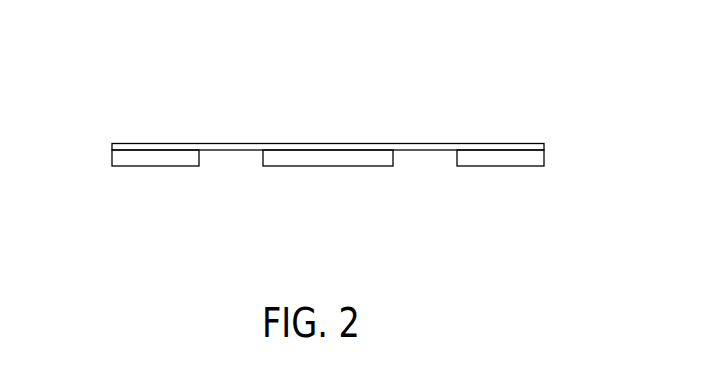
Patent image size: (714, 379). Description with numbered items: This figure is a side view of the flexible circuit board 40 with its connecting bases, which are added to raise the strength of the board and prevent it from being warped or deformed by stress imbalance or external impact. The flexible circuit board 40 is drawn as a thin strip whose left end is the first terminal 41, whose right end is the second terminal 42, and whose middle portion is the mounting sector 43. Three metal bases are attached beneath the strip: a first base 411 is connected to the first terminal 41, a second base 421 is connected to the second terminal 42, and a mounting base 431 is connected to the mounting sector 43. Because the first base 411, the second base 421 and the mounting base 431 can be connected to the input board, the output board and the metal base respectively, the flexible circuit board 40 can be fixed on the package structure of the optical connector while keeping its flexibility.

The flexible circuit board 40 is at (330, 128).
The first terminal 41 is at (131, 175).
The second terminal 42 is at (527, 175).
The mounting sector 43 is at (327, 144).
The first base 411 is at (153, 166).
The mounting base 431 is at (325, 166).
The second base 421 is at (498, 166).